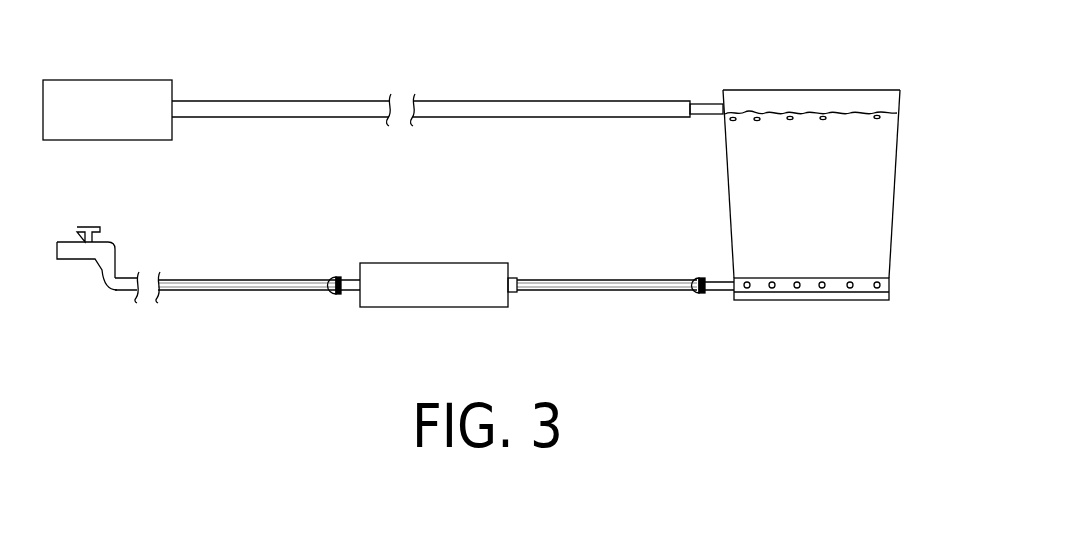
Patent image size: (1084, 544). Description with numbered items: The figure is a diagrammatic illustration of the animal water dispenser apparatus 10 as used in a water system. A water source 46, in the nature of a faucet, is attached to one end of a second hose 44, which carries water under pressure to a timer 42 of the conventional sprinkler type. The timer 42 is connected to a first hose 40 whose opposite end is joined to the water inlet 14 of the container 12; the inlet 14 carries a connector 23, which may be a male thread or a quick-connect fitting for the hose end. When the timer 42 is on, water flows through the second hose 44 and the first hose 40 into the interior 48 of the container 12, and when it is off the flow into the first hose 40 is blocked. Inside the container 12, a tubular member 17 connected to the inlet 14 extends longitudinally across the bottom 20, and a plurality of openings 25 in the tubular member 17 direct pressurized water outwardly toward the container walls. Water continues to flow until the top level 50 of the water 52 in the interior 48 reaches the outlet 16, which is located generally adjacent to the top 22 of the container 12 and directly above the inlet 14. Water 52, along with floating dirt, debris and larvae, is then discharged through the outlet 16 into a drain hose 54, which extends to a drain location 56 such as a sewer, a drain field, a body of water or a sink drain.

The animal water dispenser apparatus 10 is at (928, 70).
The container 12 is at (843, 149).
The water inlet 14 is at (718, 291).
The outlet 16 is at (700, 104).
The tubular member 17 is at (811, 246).
The bottom 20 is at (811, 277).
The top 22 is at (752, 90).
The connector 23 is at (697, 278).
The openings 25 is at (748, 281).
The first hose 40 is at (625, 281).
The timer 42 is at (473, 263).
The second hose 44 is at (255, 281).
The water source 46 is at (115, 257).
The interior 48 is at (878, 245).
The top level 50 is at (803, 100).
The water 52 is at (883, 153).
The drain hose 54 is at (573, 101).
The drain location 56 is at (137, 80).